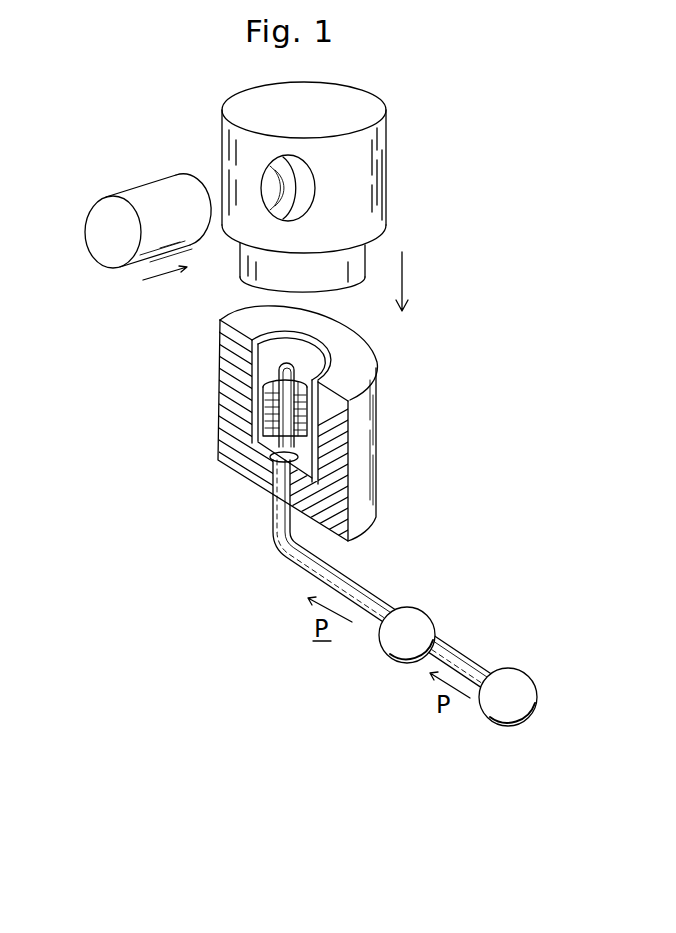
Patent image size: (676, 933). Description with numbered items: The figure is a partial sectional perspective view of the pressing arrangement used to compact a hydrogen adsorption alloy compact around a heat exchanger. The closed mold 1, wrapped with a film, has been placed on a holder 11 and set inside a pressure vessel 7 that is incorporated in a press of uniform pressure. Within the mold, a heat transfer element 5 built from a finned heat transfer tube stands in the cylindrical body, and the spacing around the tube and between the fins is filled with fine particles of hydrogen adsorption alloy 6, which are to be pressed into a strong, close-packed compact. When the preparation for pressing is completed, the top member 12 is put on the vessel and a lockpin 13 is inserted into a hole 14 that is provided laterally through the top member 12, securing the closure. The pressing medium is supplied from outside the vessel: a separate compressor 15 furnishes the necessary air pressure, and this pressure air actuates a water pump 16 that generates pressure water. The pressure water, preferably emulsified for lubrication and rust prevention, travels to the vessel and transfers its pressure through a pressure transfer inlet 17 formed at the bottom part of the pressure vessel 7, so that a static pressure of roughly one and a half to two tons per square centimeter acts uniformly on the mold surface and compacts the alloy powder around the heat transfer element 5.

The closed mold 1 is at (279, 406).
The heat transfer element 5 is at (268, 350).
The hydrogen adsorption alloy 6 is at (263, 393).
The pressure vessel 7 is at (377, 435).
The holder 11 is at (318, 464).
The top member 12 is at (385, 202).
The lockpin 13 is at (85, 242).
The hole 14 is at (316, 182).
The compressor 15 is at (497, 726).
The water pump 16 is at (392, 661).
The pressure transfer inlet 17 is at (263, 455).